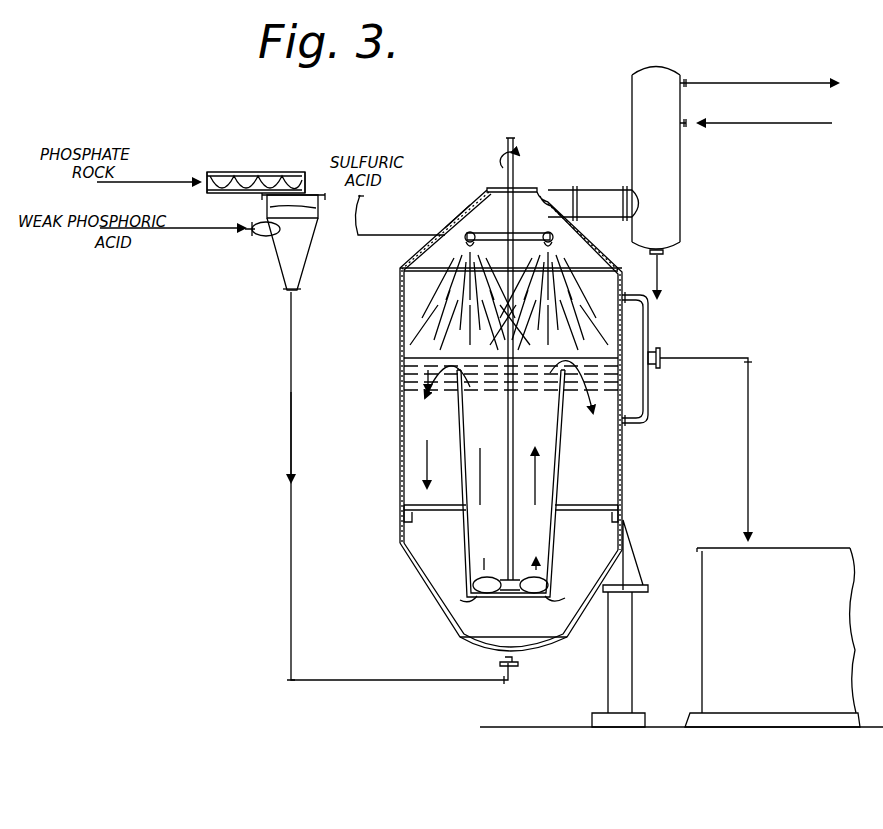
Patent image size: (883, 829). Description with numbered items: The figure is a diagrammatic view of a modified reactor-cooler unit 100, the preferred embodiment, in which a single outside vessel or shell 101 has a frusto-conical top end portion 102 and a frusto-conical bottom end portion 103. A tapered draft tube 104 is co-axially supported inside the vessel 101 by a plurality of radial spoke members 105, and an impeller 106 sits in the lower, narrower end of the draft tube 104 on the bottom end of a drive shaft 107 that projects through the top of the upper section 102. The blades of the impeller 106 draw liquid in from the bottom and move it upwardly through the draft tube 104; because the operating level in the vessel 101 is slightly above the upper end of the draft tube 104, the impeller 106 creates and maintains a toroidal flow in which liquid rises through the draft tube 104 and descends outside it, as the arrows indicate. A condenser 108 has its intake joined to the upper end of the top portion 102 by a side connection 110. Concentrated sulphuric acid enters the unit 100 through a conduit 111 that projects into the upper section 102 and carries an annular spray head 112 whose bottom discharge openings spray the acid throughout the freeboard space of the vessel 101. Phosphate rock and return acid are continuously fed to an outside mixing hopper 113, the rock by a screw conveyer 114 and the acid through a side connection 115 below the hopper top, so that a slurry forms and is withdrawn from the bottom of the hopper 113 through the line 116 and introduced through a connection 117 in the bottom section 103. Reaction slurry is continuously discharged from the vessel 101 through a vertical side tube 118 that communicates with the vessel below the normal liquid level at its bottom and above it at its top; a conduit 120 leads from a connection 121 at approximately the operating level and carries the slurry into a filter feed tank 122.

The reactor-cooler unit 100 is at (436, 160).
The outside vessel 101 is at (400, 325).
The frusto-conical top end portion 102 is at (480, 200).
The frusto-conical bottom end portion 103 is at (430, 596).
The tapered draft tube 104 is at (458, 415).
The radial spoke members 105 is at (404, 500).
The impeller 106 is at (502, 594).
The drive shaft 107 is at (516, 178).
The condenser 108 is at (680, 185).
The side connection 110 is at (598, 200).
The conduit 111 is at (400, 215).
The annular spray head 112 is at (472, 228).
The mixing hopper 113 is at (288, 263).
The screw conveyer 114 is at (250, 172).
The side connection 115 is at (262, 238).
The line 116 is at (290, 437).
The connection 117 is at (516, 668).
The vertical side tube 118 is at (645, 320).
The conduit 120 is at (714, 356).
The connection 121 is at (658, 350).
The filter feed tank 122 is at (800, 548).